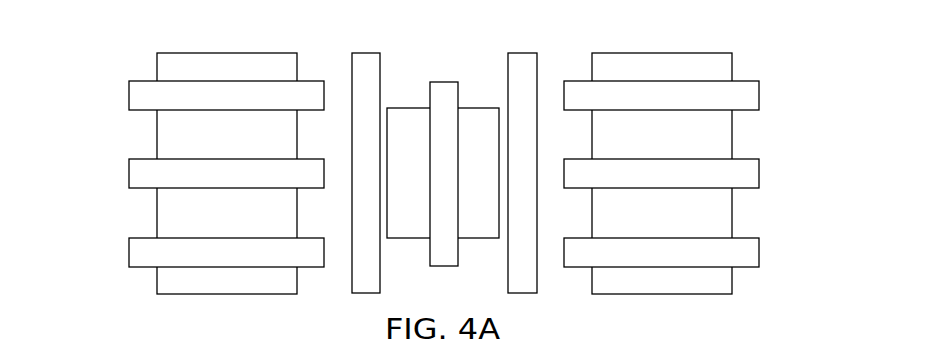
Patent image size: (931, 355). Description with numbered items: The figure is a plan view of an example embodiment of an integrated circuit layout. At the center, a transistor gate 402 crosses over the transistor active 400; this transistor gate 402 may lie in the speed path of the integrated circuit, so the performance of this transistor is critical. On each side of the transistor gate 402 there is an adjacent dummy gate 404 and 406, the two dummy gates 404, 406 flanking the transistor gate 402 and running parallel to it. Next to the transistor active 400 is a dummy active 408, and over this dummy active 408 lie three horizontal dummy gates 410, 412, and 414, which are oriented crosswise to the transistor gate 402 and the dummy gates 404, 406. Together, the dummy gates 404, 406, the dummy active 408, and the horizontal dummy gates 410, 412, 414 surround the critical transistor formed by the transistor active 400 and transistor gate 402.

The transistor active 400 is at (472, 116).
The transistor gate 402 is at (442, 89).
The dummy gate 404 is at (365, 61).
The dummy gate 406 is at (522, 61).
The dummy active 408 is at (661, 61).
The horizontal dummy gate 410 is at (752, 94).
The horizontal dummy gate 412 is at (752, 172).
The horizontal dummy gate 414 is at (752, 253).